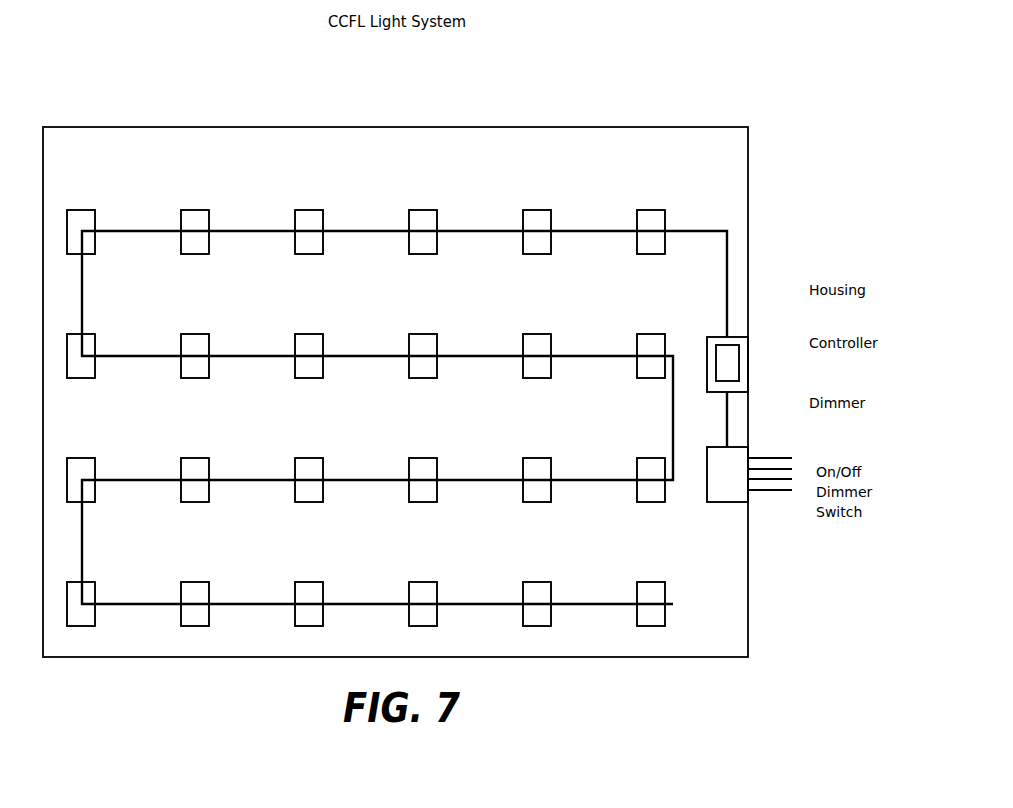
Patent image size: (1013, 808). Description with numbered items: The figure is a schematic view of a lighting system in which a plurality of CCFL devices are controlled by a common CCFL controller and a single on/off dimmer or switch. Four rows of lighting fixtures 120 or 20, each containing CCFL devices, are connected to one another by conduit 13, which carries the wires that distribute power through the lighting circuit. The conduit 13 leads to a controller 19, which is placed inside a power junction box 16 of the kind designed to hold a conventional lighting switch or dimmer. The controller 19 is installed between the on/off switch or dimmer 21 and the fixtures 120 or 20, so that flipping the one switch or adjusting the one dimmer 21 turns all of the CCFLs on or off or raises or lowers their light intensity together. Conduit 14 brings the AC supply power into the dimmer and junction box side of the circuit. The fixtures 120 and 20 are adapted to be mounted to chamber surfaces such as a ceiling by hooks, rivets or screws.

The conduit 13 is at (347, 231).
The lighting fixture 120 is at (654, 209).
The lighting fixture 20 is at (591, 209).
The power junction box 16 is at (741, 342).
The controller 19 is at (730, 372).
The on/off switch or dimmer 21 is at (735, 452).
The conduit 14 is at (775, 478).